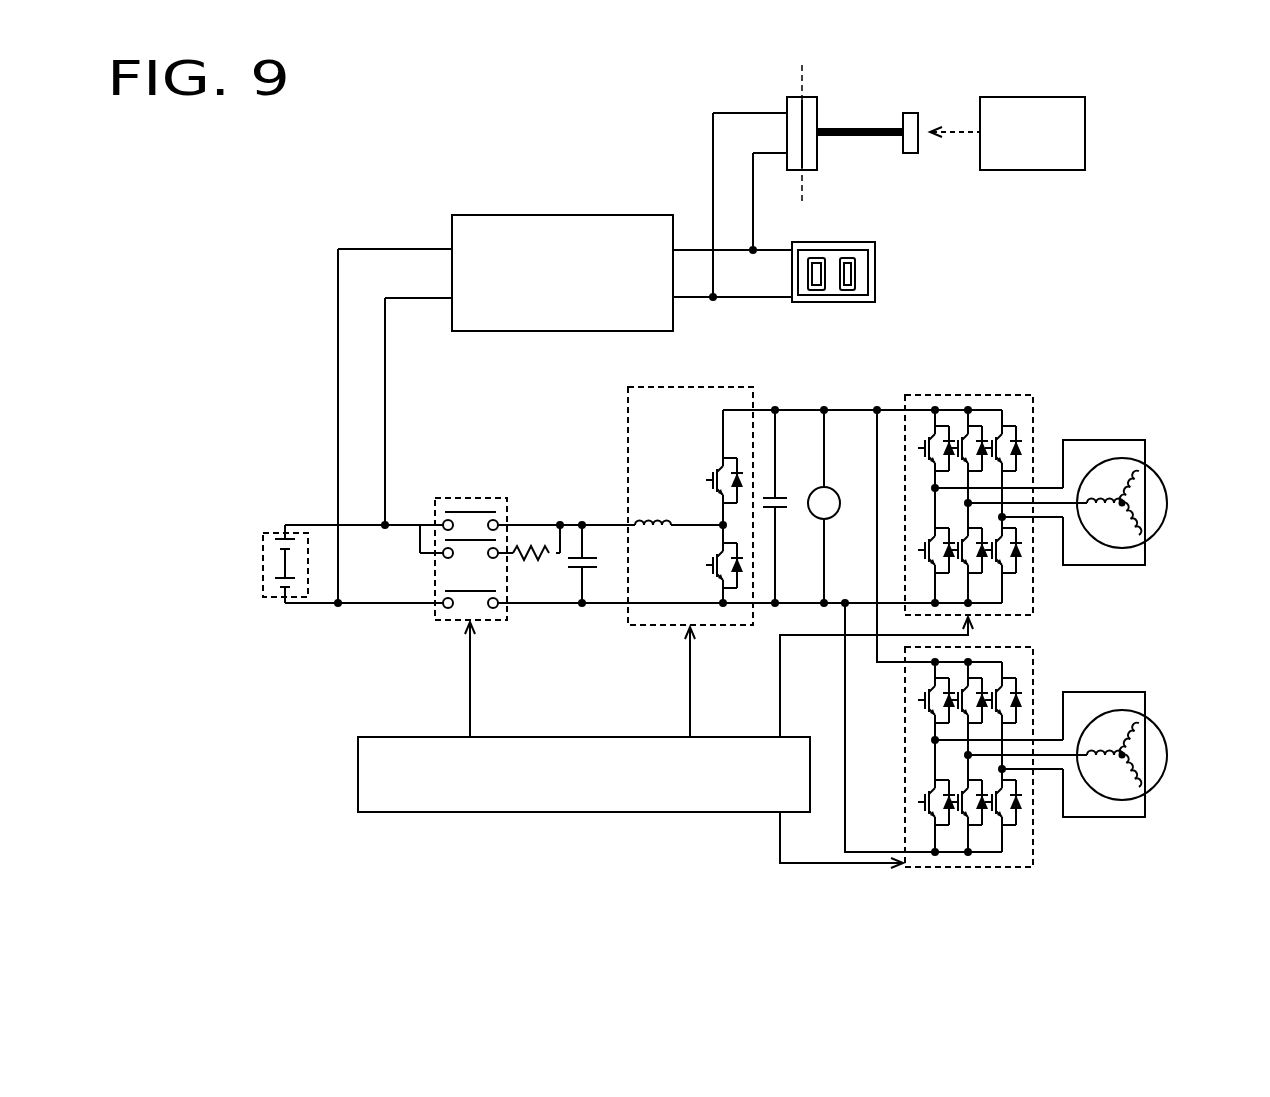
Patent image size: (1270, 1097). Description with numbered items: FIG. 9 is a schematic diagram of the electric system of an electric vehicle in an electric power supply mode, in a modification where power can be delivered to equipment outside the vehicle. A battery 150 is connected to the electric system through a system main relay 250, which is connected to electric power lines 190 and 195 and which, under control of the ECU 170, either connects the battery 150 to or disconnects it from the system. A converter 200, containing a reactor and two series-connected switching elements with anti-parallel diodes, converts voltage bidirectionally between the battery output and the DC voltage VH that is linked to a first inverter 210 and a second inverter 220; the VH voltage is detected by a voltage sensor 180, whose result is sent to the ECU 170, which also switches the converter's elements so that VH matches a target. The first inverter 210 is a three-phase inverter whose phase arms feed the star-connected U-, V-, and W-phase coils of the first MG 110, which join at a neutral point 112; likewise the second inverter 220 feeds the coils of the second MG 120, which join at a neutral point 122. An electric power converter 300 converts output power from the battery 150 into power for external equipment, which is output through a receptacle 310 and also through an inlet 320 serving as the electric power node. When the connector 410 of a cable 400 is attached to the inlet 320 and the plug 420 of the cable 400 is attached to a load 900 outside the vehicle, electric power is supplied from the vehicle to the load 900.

The first MG 110 is at (1162, 526).
The neutral point 112 is at (1122, 500).
The second MG 120 is at (1162, 778).
The neutral point 122 is at (1122, 752).
The battery 150 is at (272, 533).
The ECU 170 is at (605, 737).
The voltage sensor 180 is at (837, 515).
The electric power line 190 is at (603, 525).
The electric power line 195 is at (602, 603).
The converter 200 is at (628, 412).
The first inverter 210 is at (1034, 587).
The second inverter 220 is at (1034, 839).
The system main relay 250 is at (472, 498).
The electric power converter 300 is at (530, 331).
The receptacle 310 is at (833, 302).
The inlet 320 is at (796, 97).
The cable 400 is at (874, 156).
The connector 410 is at (808, 170).
The plug 420 is at (912, 113).
The load 900 is at (1032, 170).